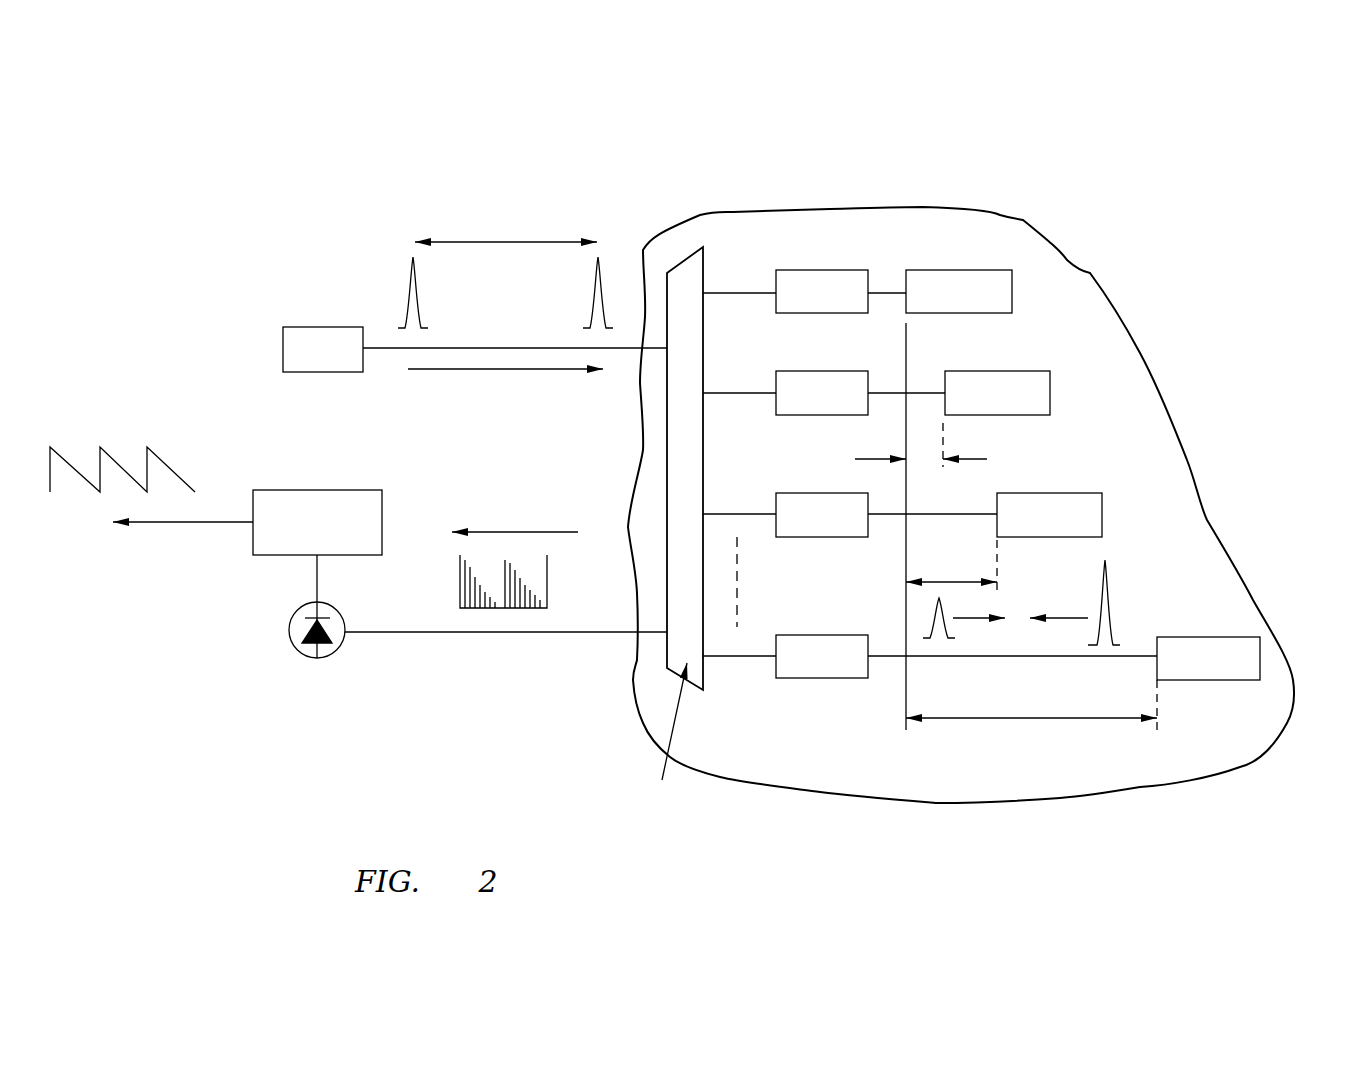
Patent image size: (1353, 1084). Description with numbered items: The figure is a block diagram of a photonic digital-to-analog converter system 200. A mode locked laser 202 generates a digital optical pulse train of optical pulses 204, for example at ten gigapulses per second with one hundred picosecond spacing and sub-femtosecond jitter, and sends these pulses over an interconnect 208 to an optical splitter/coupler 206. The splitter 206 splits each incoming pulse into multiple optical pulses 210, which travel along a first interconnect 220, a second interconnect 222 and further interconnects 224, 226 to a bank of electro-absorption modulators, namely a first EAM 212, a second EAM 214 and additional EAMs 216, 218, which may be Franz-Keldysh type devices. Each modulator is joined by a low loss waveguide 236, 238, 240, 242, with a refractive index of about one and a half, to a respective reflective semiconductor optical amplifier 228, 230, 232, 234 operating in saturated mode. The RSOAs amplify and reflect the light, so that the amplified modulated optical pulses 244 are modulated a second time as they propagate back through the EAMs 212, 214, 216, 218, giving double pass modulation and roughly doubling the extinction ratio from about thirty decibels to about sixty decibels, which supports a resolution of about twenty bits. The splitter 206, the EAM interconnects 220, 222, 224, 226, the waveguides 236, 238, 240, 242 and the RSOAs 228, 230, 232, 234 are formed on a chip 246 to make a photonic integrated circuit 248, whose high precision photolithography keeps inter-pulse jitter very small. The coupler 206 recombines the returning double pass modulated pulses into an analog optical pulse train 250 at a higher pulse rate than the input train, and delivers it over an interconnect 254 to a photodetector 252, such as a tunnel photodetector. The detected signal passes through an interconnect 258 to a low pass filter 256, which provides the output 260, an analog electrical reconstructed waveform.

The photonic digital-to-analog converter system 200 is at (218, 218).
The mode locked laser 202 is at (325, 323).
The optical pulses 204 is at (420, 283).
The optical splitter/coupler 206 is at (685, 265).
The interconnect 208 is at (393, 353).
The multiple optical pulses 210 is at (930, 622).
The first electro-absorption modulator 212 is at (795, 272).
The second electro-absorption modulator 214 is at (797, 368).
The electro-absorption modulator 216 is at (798, 492).
The electro-absorption modulator 218 is at (850, 633).
The first interconnect 220 is at (730, 288).
The second interconnect 222 is at (725, 390).
The interconnect 224 is at (733, 512).
The interconnect 226 is at (740, 657).
The reflective semiconductor optical amplifier 228 is at (980, 270).
The reflective semiconductor optical amplifier 230 is at (1002, 368).
The reflective semiconductor optical amplifier 232 is at (1070, 493).
The reflective semiconductor optical amplifier 234 is at (1168, 635).
The EAM-RSOA interconnect 236 is at (879, 293).
The EAM-RSOA interconnect 238 is at (895, 390).
The EAM-RSOA interconnect 240 is at (943, 513).
The EAM-RSOA interconnect 242 is at (967, 658).
The amplified modulated optical pulses 244 is at (1110, 583).
The chip 246 is at (795, 220).
The photonic integrated circuit 248 is at (1132, 410).
The optical pulse train 250 is at (553, 592).
The photodetector 252 is at (340, 602).
The interconnect 254 is at (373, 632).
The low pass filter 256 is at (382, 510).
The interconnect 258 is at (312, 573).
The output 260 is at (200, 520).